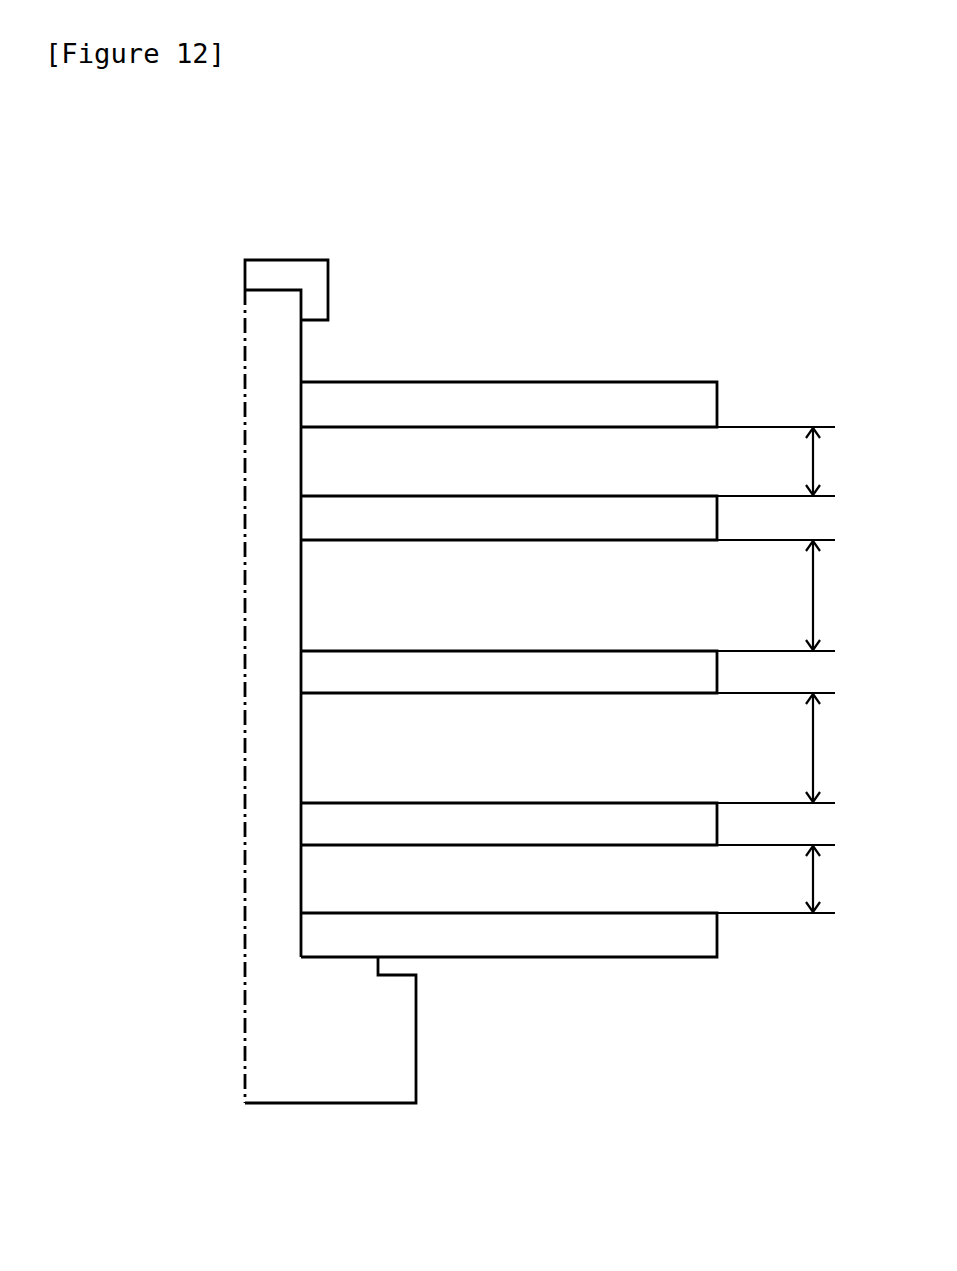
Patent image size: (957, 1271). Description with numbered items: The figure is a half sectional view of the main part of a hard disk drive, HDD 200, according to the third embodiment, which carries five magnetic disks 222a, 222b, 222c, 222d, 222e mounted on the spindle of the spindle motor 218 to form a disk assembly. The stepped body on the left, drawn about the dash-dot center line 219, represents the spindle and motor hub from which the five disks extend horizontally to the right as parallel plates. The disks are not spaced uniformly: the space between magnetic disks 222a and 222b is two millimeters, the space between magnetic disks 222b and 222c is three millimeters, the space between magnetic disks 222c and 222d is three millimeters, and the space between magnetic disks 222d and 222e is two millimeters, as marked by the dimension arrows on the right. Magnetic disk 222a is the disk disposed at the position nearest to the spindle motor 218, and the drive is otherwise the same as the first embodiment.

The HDD 200 is at (418, 290).
The spindle motor 218 is at (370, 1103).
The center line 219 is at (246, 663).
The magnetic disk 222a is at (509, 935).
The magnetic disk 222b is at (509, 824).
The magnetic disk 222c is at (509, 672).
The magnetic disk 222d is at (509, 518).
The magnetic disk 222e is at (509, 404).